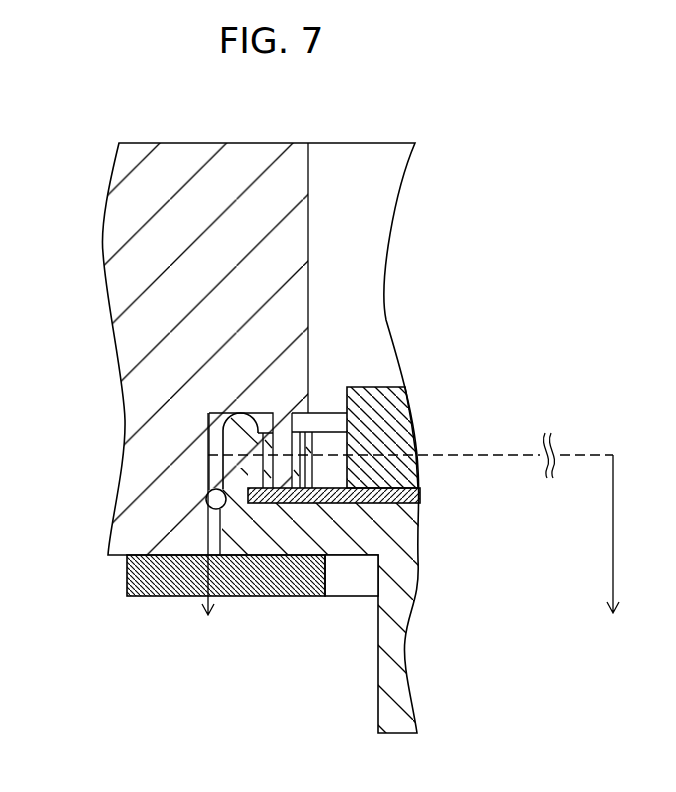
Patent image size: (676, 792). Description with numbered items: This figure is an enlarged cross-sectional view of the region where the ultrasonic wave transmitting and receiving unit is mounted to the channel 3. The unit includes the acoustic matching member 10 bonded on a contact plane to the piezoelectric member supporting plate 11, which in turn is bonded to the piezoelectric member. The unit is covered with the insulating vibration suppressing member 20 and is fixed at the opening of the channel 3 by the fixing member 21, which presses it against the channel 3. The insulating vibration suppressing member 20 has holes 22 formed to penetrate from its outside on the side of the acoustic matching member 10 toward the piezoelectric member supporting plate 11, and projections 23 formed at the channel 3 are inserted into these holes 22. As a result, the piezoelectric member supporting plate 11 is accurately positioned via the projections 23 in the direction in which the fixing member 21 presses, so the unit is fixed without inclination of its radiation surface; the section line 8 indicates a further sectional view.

The channel 3 is at (182, 143).
The section line VIII-VIII 8 is at (411, 531).
The acoustic matching member 10 is at (381, 388).
The piezoelectric member supporting plate 11 is at (386, 505).
The insulating vibration suppressing member 20 is at (350, 555).
The fixing member 21 is at (125, 600).
The holes 22 is at (262, 437).
The projections 23 is at (243, 482).